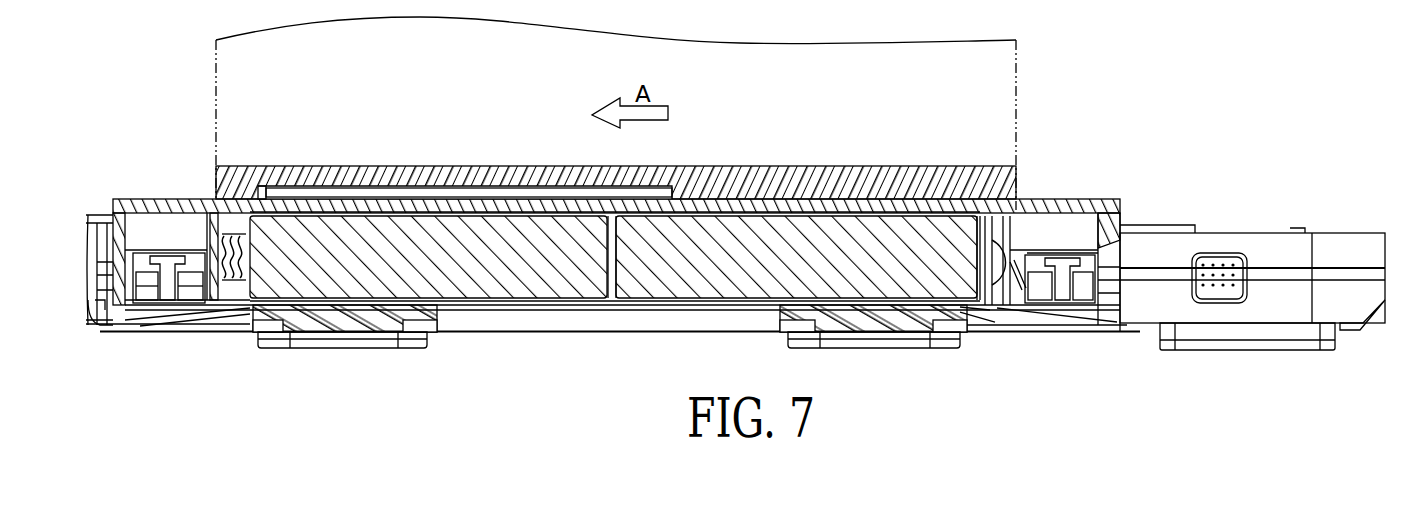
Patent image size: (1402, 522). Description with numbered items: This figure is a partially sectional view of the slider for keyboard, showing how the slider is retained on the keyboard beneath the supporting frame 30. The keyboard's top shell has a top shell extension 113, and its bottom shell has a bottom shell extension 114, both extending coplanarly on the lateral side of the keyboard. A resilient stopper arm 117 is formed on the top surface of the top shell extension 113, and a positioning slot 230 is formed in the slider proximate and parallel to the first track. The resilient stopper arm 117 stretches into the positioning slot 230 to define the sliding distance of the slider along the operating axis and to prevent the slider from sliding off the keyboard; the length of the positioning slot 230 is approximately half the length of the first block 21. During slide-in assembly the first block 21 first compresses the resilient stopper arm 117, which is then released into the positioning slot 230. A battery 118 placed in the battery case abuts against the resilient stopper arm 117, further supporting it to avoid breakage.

The supporting frame 30 is at (1017, 80).
The first block 21 is at (943, 168).
The positioning slot 230 is at (507, 193).
The resilient stopper arm 117 is at (263, 195).
The top shell extension 113 is at (117, 222).
The battery 118 is at (480, 277).
The bottom shell extension 114 is at (115, 297).